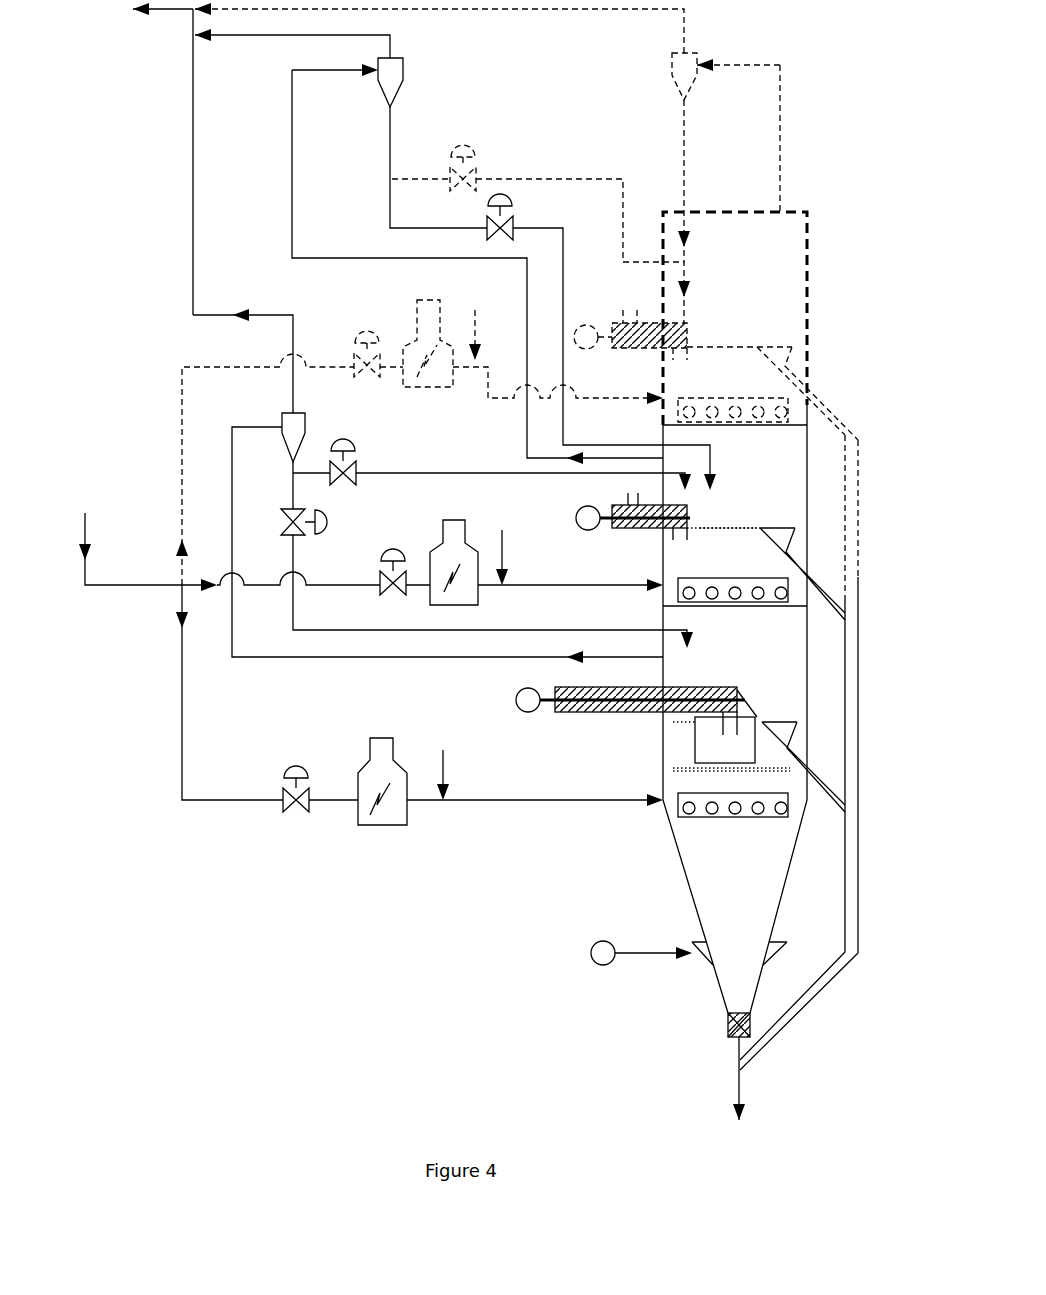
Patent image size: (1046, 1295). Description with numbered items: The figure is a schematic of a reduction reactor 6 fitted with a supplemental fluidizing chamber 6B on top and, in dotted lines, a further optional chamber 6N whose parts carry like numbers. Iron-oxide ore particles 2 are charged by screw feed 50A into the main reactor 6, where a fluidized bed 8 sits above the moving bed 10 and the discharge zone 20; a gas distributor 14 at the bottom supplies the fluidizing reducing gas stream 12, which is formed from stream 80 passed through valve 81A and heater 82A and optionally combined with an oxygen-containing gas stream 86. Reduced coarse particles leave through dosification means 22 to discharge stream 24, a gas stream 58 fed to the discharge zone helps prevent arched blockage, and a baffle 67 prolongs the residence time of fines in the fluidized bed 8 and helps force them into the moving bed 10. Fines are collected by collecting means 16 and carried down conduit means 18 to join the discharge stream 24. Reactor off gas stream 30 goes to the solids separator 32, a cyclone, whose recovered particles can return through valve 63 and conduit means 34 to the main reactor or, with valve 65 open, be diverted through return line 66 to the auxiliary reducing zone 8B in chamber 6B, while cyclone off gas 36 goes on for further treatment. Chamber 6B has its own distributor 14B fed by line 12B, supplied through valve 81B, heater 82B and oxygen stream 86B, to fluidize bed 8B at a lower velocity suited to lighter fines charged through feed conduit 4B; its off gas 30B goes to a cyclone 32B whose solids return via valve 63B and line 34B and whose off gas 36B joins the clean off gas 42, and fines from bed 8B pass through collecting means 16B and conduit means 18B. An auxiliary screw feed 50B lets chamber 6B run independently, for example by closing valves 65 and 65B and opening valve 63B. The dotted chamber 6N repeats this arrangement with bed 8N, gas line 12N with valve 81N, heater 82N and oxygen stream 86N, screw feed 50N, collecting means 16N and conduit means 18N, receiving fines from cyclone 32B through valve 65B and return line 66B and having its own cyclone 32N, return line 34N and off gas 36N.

The iron-oxide ore particles 2 is at (620, 300).
The feed conduit 4B is at (690, 540).
The reduction reactor 6 is at (808, 645).
The supplemental fluidizing chamber 6B is at (808, 452).
The supplemental fluidizing chamber 6N is at (810, 242).
The fluidized bed 8 is at (688, 763).
The auxiliary reducing zone 8B is at (739, 559).
The auxiliary reducing zone 8N is at (737, 388).
The moving bed 10 is at (698, 793).
The reducing gas stream 12 is at (555, 815).
The reducing gas line 12B is at (505, 577).
The reducing gas line 12N is at (492, 402).
The gas distributor 14 is at (700, 818).
The separate distributor 14B is at (685, 594).
The collecting means 16 is at (776, 722).
The collecting means 16B is at (786, 527).
The collecting means 16N is at (792, 346).
The conduit means 18 is at (862, 848).
The conduit means 18B is at (858, 655).
The conduit means 18N is at (862, 502).
The discharge zone 20 is at (747, 908).
The dosification means 22 is at (727, 1022).
The discharge stream 24 is at (737, 1090).
The reactor off gas stream 30 is at (240, 660).
The off gas stream 30B is at (292, 172).
The solids separator 32 is at (285, 455).
The solids separator 32B is at (380, 85).
The solids separator 32N is at (670, 60).
The conduit means 34 is at (292, 596).
The conduit means 34B is at (576, 230).
The conduit means 34N is at (686, 152).
The cyclone off gas 36 is at (195, 270).
The cyclone off gas 36B is at (392, 42).
The cyclone off gas 36N is at (690, 9).
The clean off gas 42 is at (172, 17).
The screw feed 50A is at (600, 713).
The auxiliary screw feed 50B is at (640, 530).
The screw feed 50N is at (645, 348).
The gas stream 58 is at (625, 965).
The valve 63 is at (281, 530).
The valve 63B is at (520, 204).
The valve 65 is at (346, 448).
The valve 65B is at (472, 143).
The return line 66 is at (455, 470).
The return line 66B is at (590, 175).
The baffle 67 is at (755, 720).
The reducing gas stream 80 is at (85, 528).
The feed control valve 81A is at (290, 762).
The feed control valve for upper bed 81B is at (384, 596).
The feed control valve for additional bed 81N is at (362, 335).
The heater 82A is at (370, 738).
The heater 82B is at (440, 527).
The heater 82N is at (415, 312).
The oxygen-containing gas stream 86 is at (446, 764).
The oxygen-containing gas stream 86B is at (502, 530).
The oxygen-containing gas stream 86N is at (475, 308).